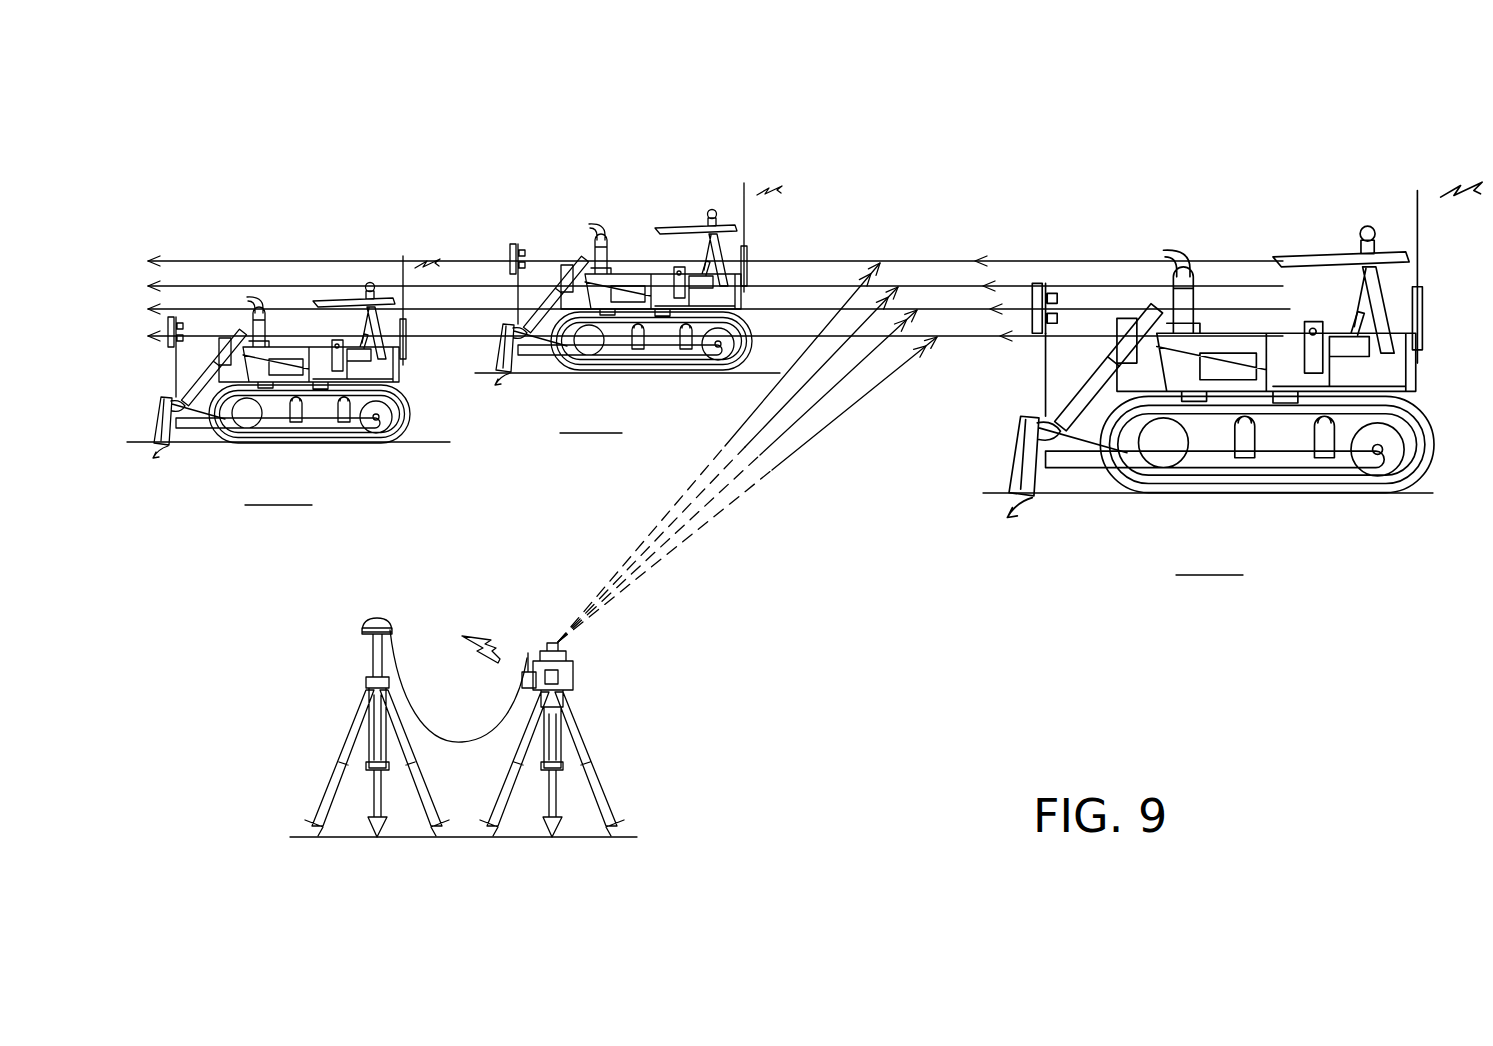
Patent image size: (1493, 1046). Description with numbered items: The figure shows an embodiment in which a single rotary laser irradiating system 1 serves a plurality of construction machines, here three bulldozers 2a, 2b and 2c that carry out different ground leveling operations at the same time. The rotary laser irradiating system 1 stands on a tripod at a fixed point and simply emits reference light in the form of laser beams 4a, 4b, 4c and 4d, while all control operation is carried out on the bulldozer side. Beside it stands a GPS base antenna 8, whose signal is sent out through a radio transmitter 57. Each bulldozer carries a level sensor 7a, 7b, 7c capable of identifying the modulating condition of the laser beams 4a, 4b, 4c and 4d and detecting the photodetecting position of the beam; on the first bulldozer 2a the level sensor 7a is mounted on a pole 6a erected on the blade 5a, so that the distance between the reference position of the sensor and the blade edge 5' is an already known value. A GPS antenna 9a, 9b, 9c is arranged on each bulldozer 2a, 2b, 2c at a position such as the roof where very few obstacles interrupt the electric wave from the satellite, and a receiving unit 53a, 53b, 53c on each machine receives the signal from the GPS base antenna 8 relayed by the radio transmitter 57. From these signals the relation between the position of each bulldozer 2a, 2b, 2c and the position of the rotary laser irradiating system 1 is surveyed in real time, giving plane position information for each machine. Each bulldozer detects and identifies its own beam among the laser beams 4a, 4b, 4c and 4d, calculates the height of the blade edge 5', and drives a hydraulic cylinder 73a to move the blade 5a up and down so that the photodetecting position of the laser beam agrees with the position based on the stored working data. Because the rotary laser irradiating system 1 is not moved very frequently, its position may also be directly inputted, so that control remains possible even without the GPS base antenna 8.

The rotary laser irradiating system 1 is at (575, 675).
The radio transmitter 57 is at (522, 680).
The GPS base antenna 8 is at (380, 618).
The bulldozer 2a is at (1254, 300).
The bulldozer 2b is at (632, 222).
The bulldozer 2c is at (286, 294).
The level sensor 7a is at (1043, 285).
The level sensor 7b is at (517, 243).
The level sensor 7c is at (178, 315).
The GPS antenna 9a is at (1367, 232).
The GPS antenna 9b is at (713, 210).
The GPS antenna 9c is at (368, 285).
The receiving unit 53a is at (1417, 300).
The receiving unit 53b is at (747, 225).
The receiving unit 53c is at (405, 303).
The hydraulic cylinder 73a is at (1097, 365).
The pole 6a is at (1043, 370).
The blade 5a is at (1015, 440).
The blade edge 5' is at (980, 504).
The laser beam 4a is at (795, 430).
The laser beam 4b is at (823, 370).
The laser beam 4c is at (825, 326).
The laser beam 4d is at (773, 463).